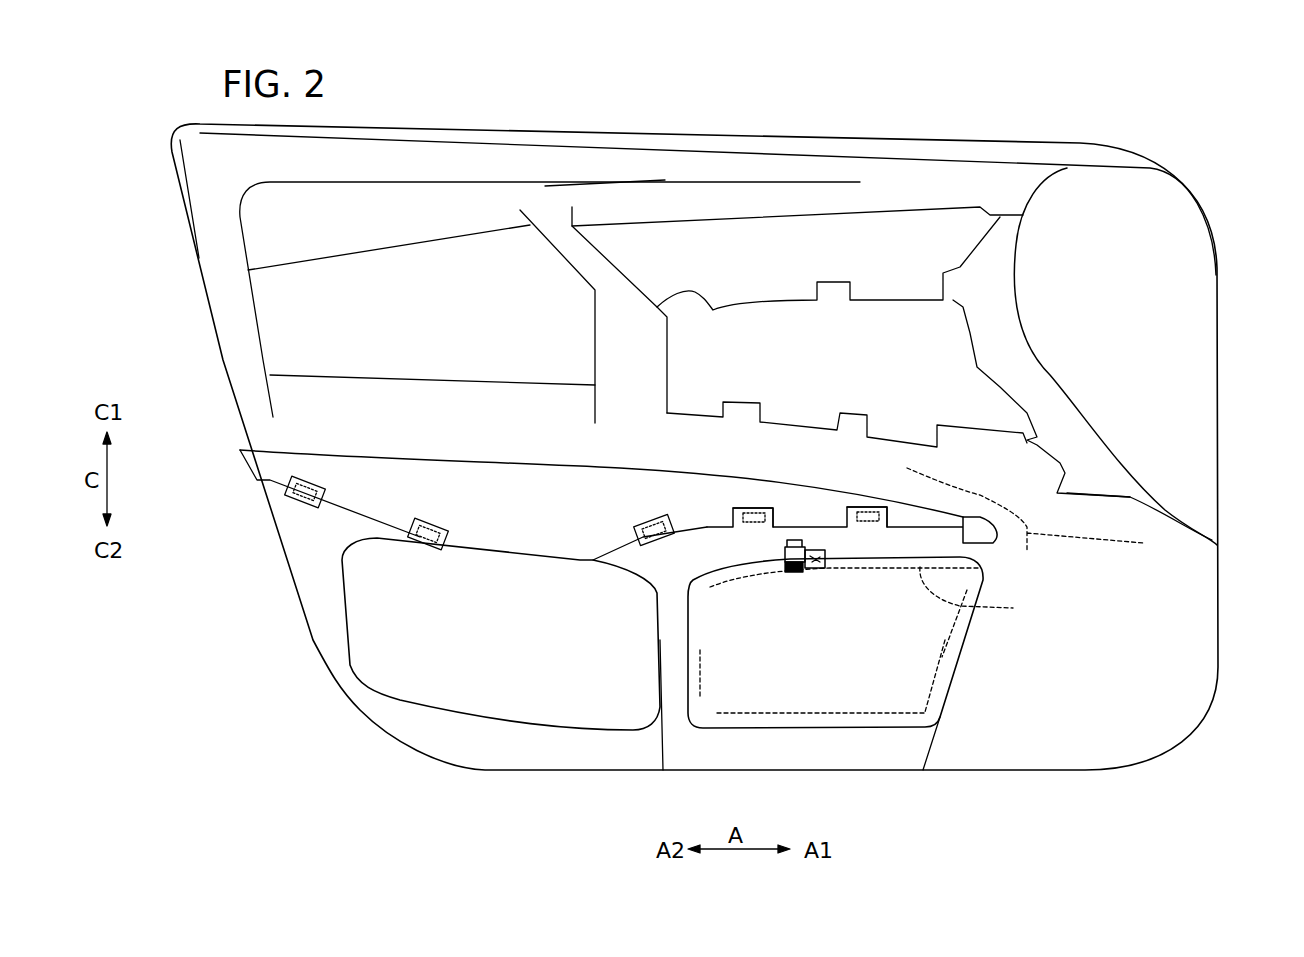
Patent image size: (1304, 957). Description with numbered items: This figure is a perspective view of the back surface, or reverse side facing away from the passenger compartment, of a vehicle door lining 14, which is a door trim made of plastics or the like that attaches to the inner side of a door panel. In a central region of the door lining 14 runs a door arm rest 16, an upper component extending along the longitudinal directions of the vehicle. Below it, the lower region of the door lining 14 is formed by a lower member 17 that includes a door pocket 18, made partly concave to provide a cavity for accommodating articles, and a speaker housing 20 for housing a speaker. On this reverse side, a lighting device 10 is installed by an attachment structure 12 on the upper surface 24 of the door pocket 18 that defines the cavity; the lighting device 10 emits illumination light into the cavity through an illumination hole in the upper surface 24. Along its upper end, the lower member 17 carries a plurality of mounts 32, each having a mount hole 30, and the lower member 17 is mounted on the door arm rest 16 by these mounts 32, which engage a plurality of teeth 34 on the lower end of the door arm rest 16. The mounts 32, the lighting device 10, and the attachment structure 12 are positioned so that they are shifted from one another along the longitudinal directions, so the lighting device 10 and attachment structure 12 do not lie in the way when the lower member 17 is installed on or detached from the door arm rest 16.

The lighting device 10 is at (793, 540).
The attachment structure 12 is at (820, 568).
The door lining 14 is at (908, 131).
The door arm rest 16 is at (512, 480).
The lower member 17 is at (835, 748).
The door pocket 18 is at (863, 702).
The speaker housing 20 is at (1135, 728).
The upper surface 24 is at (977, 607).
The mount holes 30 is at (760, 513).
The mounts 32 is at (724, 520).
The teeth 34 is at (750, 524).